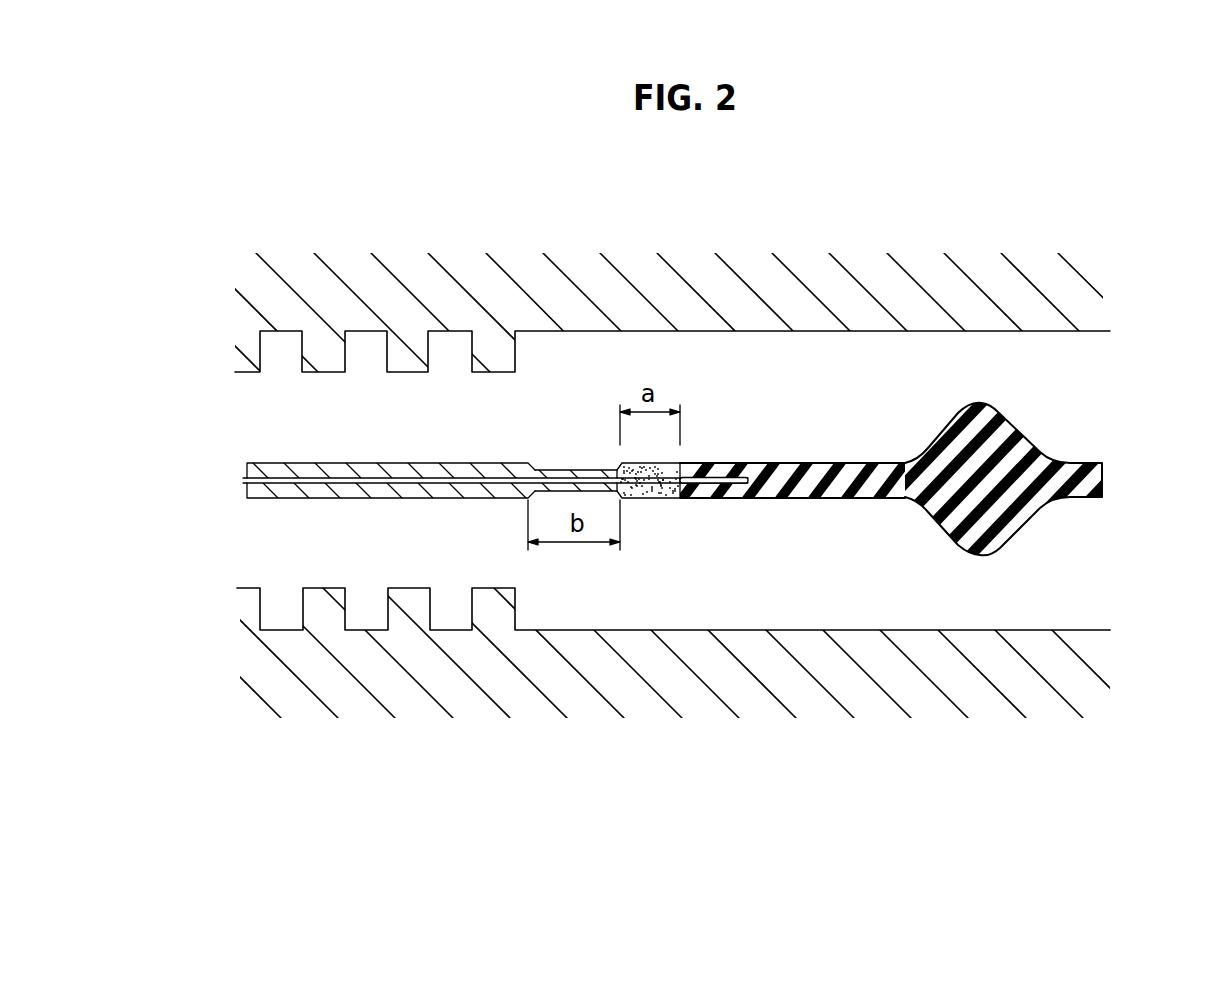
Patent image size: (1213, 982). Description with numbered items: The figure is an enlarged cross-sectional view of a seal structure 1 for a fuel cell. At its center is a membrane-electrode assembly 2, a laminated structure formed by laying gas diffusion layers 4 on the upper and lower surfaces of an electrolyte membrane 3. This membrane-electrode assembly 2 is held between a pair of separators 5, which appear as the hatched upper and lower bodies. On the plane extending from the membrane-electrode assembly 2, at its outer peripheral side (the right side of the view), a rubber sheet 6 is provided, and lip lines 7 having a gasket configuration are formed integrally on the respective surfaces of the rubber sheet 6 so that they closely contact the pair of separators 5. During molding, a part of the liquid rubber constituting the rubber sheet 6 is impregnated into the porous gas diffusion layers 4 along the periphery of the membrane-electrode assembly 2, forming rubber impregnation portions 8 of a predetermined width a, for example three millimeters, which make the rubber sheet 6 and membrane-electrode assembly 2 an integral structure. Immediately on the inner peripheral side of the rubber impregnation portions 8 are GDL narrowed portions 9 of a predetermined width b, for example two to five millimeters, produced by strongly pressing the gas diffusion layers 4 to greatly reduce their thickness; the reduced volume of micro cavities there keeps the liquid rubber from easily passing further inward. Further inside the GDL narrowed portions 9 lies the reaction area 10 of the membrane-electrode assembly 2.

The seal structure 1 is at (1108, 450).
The membrane-electrode assembly 2 is at (288, 460).
The electrolyte membrane 3 is at (243, 481).
The gas diffusion layer 4 is at (257, 472).
The separator 5 is at (1065, 283).
The rubber sheet 6 is at (798, 463).
The lip line 7 is at (983, 417).
The rubber impregnation portion 8 is at (655, 495).
The GDL narrowed portion 9 is at (565, 468).
The reaction area 10 is at (353, 463).